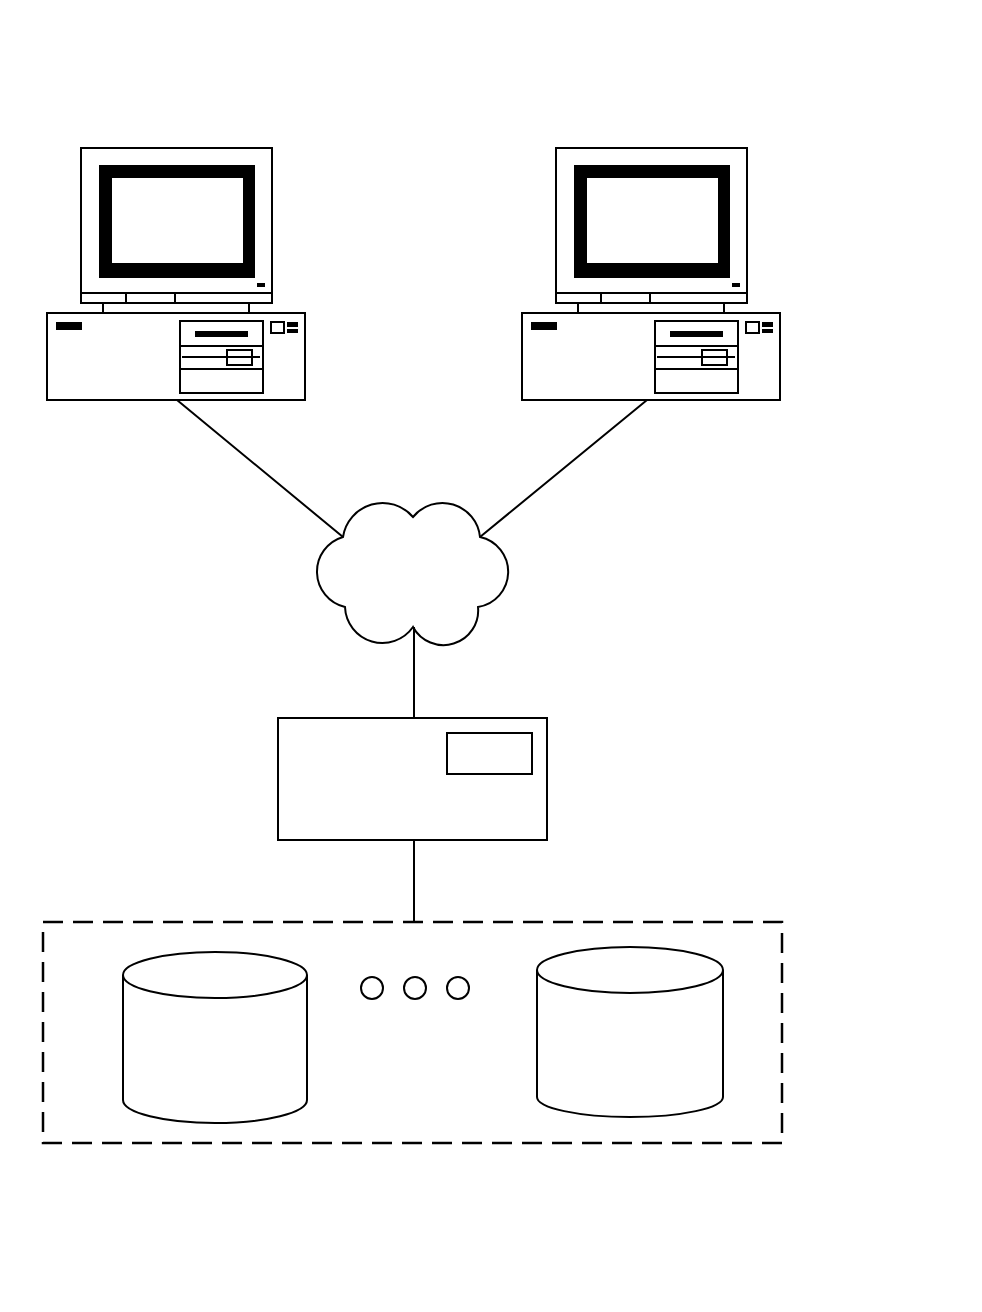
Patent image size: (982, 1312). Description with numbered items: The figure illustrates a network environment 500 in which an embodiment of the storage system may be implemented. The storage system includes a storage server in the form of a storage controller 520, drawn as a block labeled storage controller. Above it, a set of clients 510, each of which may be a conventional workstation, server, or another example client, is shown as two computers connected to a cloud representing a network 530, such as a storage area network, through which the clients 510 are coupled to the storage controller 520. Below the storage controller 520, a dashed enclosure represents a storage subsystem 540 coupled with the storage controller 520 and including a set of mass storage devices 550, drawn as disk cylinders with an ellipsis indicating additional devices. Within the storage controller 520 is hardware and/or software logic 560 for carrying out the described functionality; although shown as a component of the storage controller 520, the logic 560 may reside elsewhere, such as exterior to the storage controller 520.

The network environment 500 is at (829, 102).
The clients 510 is at (120, 147).
The storage controller 520 is at (277, 738).
The network 530 is at (317, 572).
The storage subsystem 540 is at (230, 922).
The mass storage devices 550 is at (127, 968).
The logic 560 is at (535, 745).